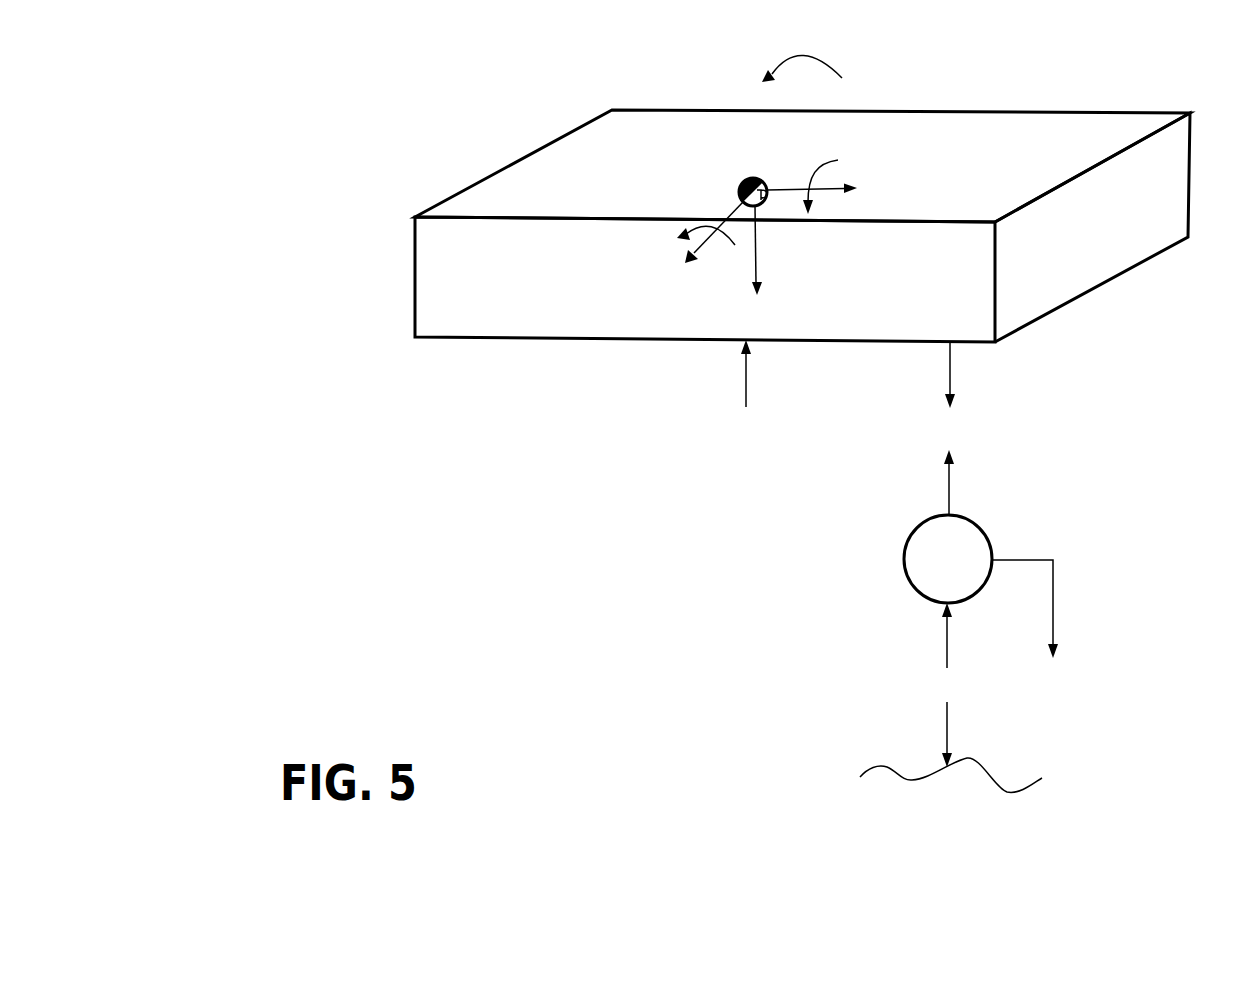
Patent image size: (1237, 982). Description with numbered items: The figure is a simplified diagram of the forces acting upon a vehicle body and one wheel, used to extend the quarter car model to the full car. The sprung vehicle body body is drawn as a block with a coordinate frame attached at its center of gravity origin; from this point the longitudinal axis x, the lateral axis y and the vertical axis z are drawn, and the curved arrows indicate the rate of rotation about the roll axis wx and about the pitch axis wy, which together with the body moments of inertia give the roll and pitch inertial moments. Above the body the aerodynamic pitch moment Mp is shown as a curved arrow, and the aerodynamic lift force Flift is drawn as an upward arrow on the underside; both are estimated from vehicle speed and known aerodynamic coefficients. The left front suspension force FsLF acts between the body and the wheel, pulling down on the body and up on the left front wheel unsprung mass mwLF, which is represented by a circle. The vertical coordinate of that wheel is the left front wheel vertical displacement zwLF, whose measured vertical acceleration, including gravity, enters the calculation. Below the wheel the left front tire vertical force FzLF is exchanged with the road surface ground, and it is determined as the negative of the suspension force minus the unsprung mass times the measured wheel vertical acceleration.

The vehicle body is at (802, 226).
The vehicle body center of gravity origin is at (752, 191).
The longitudinal axis x is at (828, 186).
The lateral axis y is at (687, 246).
The vertical axis z is at (781, 259).
The roll rate wx is at (844, 172).
The pitch rate wy is at (700, 211).
The aerodynamic pitch moment Mp is at (806, 47).
The aerodynamic lift force Flift is at (751, 407).
The left front suspension force FsLF is at (988, 428).
The left front wheel unsprung mass mwLF is at (948, 559).
The left front wheel vertical displacement zwLF is at (1061, 609).
The left front tire vertical force FzLF is at (985, 685).
The road surface ground is at (951, 775).